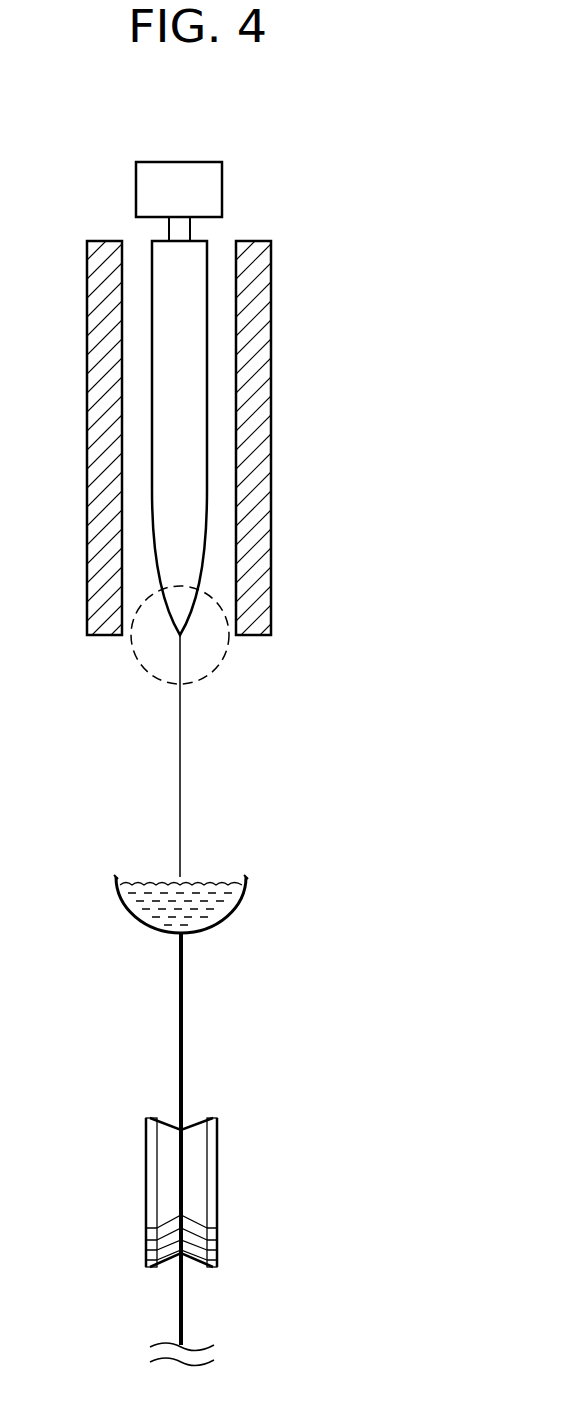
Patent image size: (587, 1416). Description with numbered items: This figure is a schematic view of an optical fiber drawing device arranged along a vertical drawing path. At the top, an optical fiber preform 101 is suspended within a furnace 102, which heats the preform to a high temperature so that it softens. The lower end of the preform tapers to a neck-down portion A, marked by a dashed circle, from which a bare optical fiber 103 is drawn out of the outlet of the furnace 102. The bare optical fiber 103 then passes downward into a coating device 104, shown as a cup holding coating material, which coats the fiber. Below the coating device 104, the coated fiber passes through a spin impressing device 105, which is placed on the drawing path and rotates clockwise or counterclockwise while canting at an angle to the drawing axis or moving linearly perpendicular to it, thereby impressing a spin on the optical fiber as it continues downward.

The optical fiber preform 101 is at (200, 252).
The furnace 102 is at (272, 558).
The neck-down portion A is at (150, 675).
The bare optical fiber 103 is at (181, 760).
The coating device 104 is at (237, 906).
The spin impressing device 105 is at (213, 1168).